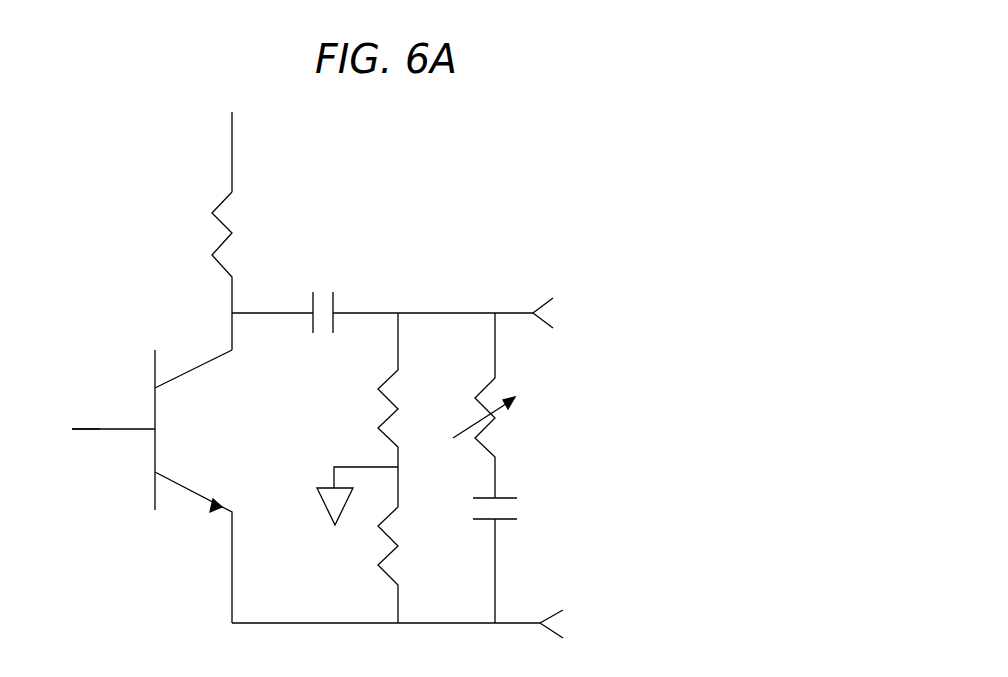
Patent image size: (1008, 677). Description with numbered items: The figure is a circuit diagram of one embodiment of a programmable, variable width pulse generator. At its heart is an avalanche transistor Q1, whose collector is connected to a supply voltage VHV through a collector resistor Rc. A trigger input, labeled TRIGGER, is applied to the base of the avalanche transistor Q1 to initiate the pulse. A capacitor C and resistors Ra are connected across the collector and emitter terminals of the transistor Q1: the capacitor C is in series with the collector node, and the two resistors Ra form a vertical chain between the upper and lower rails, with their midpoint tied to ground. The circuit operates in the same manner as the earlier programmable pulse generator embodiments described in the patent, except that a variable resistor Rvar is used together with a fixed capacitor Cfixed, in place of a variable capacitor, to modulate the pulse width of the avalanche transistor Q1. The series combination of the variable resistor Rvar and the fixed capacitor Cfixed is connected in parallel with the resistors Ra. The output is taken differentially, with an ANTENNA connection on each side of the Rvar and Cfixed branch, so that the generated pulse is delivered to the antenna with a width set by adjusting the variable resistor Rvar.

The voltage VHV is at (232, 138).
The collector resistor Rc is at (243, 271).
The avalanche transistor Q1 is at (152, 486).
The trigger input TRIGGER is at (94, 416).
The capacitor C is at (382, 298).
The resistors Ra is at (406, 468).
The variable resistor Rvar is at (504, 405).
The fixed capacitor Cfixed is at (533, 560).
The antenna ANTENNA is at (606, 468).